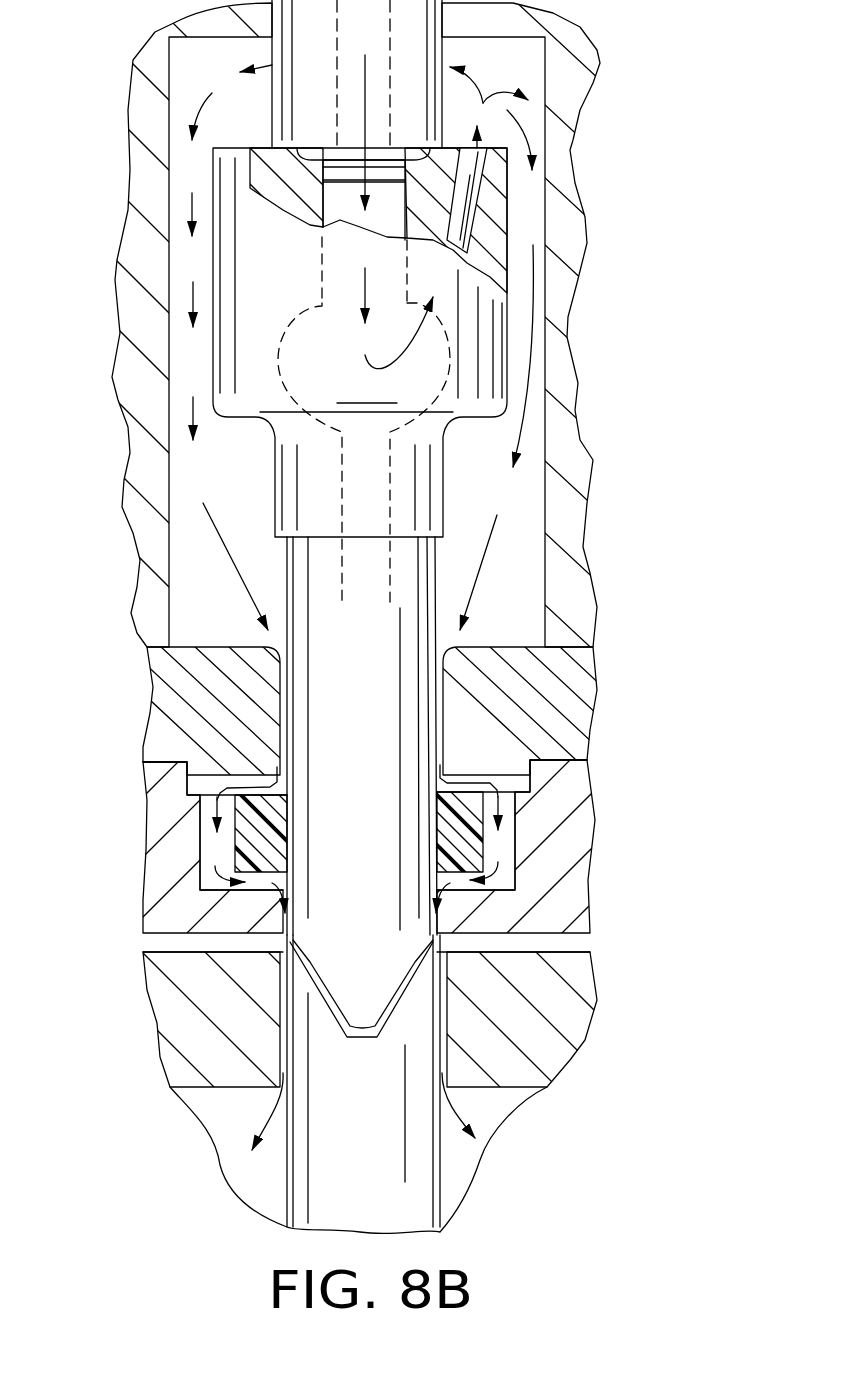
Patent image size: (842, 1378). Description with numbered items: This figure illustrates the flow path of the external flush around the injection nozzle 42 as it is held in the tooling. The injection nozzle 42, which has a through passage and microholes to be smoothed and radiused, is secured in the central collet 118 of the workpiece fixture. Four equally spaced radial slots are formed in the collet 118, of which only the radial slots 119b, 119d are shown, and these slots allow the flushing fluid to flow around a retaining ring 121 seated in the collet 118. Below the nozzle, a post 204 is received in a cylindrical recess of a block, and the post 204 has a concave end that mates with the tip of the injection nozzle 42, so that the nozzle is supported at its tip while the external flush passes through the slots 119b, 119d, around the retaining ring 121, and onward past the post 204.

The injection nozzle 42 is at (462, 626).
The central collet 118 is at (538, 719).
The radial slot 119d is at (150, 757).
The radial slot 119b is at (517, 783).
The retaining ring 121 is at (470, 843).
The post 204 is at (385, 1149).